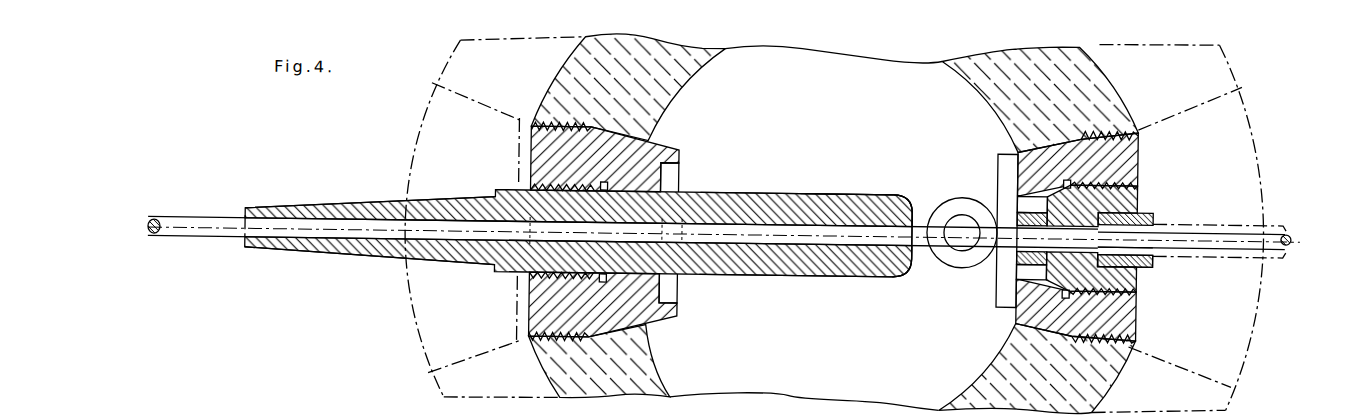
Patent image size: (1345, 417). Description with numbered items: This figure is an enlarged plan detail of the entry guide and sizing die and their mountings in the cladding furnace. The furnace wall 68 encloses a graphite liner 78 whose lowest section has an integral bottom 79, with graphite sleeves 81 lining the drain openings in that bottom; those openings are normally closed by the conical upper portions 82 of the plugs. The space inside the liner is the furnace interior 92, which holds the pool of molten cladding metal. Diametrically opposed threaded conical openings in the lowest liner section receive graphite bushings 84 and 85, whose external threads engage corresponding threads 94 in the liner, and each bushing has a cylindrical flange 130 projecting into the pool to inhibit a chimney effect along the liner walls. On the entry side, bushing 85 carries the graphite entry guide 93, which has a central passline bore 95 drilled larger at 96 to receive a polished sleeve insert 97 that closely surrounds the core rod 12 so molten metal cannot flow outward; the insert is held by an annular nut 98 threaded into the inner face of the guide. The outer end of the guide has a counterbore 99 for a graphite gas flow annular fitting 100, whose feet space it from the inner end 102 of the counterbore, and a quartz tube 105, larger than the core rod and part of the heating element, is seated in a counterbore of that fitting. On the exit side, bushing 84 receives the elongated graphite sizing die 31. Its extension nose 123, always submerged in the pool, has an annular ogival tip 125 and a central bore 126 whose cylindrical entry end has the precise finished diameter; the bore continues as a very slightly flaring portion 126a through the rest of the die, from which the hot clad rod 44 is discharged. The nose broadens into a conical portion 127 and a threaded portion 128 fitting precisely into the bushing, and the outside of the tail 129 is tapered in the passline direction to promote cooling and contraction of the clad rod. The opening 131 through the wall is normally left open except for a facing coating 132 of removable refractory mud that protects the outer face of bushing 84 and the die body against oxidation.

The core rod 12 is at (1293, 223).
The sizing die 31 is at (739, 262).
The clad rod 44 is at (202, 233).
The wall 68 is at (435, 388).
The graphite liner 78 is at (663, 363).
The bottom 79 is at (800, 362).
The graphite sleeves 81 is at (945, 247).
The upper portions of plugs 82 is at (965, 239).
The bushing 84 is at (540, 151).
The bushing 85 is at (1130, 145).
The furnace interior 92 is at (844, 122).
The entry guide 93 is at (1128, 185).
The threads 94 is at (547, 337).
The passline bore 95 is at (1085, 278).
The enlarged bore portion 96 is at (1107, 292).
The sleeve insert 97 is at (1013, 193).
The annular nut 98 is at (1020, 208).
The counterbore 99 is at (1110, 256).
The gas flow annular fitting 100 is at (1153, 250).
The inner end of counterbore 102 is at (1150, 212).
The quartz tube 105 is at (1203, 208).
The extension nose 123 is at (788, 185).
The ogival tip 125 is at (913, 190).
The central bore 126 is at (867, 214).
The flared bore portion 126a is at (366, 200).
The conical portion 127 is at (660, 281).
The threaded portion 128 is at (563, 275).
The tail 129 is at (367, 253).
The cylindrical flanges 130 is at (679, 154).
The opening 131 is at (427, 344).
The facing coating 132 is at (518, 168).